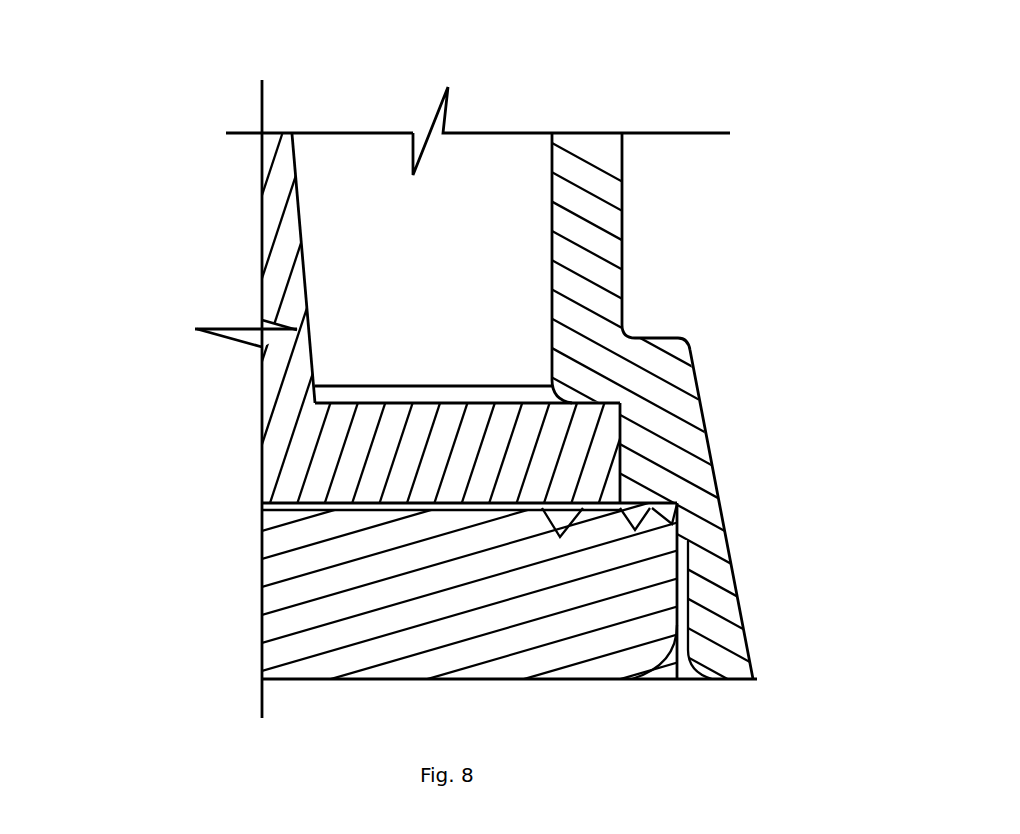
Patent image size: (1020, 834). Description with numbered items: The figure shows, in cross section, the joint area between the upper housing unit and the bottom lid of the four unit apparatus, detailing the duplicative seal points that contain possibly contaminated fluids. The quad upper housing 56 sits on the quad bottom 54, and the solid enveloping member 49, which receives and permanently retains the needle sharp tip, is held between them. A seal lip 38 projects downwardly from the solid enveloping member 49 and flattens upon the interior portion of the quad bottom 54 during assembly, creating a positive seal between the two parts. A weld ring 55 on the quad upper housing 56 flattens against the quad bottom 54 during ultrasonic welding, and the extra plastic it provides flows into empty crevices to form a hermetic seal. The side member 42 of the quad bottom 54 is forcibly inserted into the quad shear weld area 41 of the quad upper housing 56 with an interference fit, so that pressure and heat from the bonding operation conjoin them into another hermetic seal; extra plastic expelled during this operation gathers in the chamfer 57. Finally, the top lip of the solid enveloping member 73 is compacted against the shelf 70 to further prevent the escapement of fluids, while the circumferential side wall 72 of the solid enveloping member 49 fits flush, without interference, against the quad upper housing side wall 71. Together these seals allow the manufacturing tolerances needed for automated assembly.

The seal lip 38 is at (588, 508).
The quad shear weld area 41 is at (678, 514).
The side member 42 is at (690, 585).
The solid enveloping member 49 is at (495, 450).
The quad bottom 54 is at (368, 680).
The weld ring 55 is at (680, 522).
The quad upper housing 56 is at (622, 227).
The chamfer 57 is at (662, 665).
The shelf 70 is at (558, 395).
The quad upper housing side wall 71 is at (622, 467).
The circumferential side wall 72 is at (620, 468).
The top lip of solid enveloping member 73 is at (573, 420).